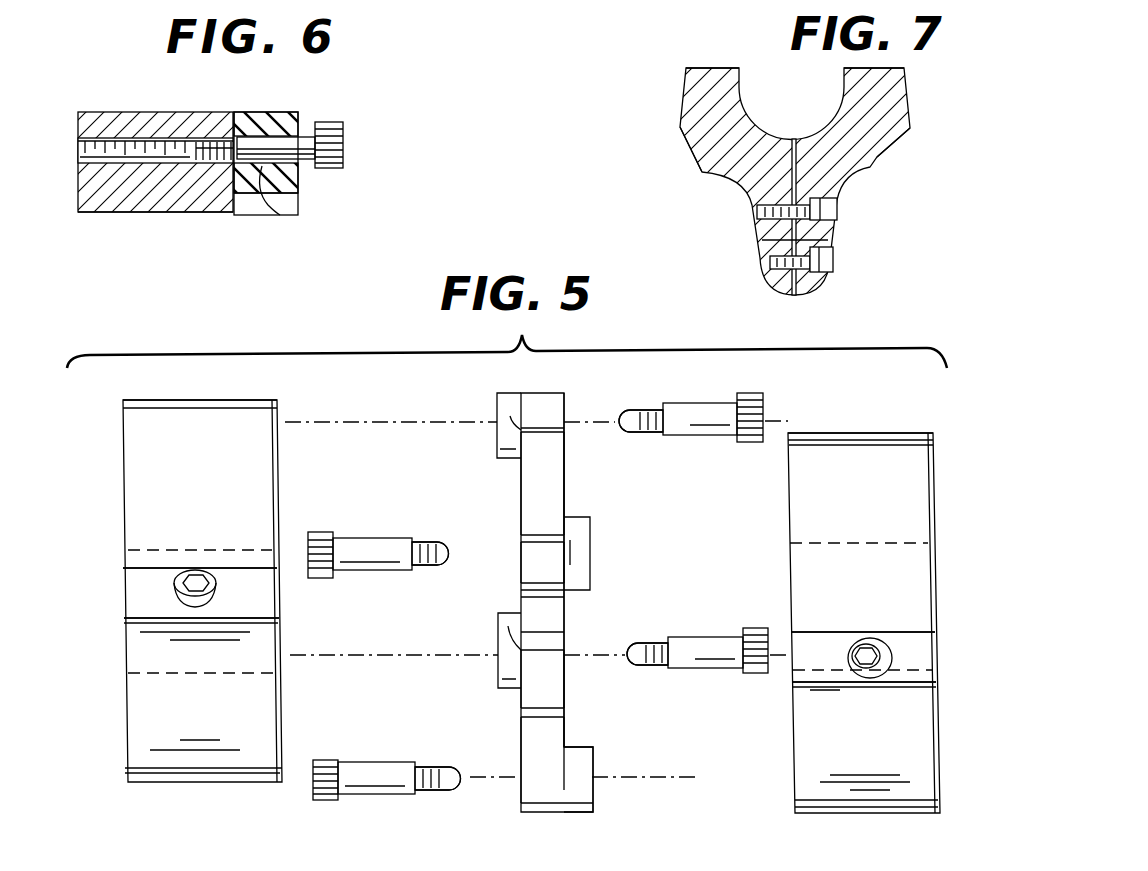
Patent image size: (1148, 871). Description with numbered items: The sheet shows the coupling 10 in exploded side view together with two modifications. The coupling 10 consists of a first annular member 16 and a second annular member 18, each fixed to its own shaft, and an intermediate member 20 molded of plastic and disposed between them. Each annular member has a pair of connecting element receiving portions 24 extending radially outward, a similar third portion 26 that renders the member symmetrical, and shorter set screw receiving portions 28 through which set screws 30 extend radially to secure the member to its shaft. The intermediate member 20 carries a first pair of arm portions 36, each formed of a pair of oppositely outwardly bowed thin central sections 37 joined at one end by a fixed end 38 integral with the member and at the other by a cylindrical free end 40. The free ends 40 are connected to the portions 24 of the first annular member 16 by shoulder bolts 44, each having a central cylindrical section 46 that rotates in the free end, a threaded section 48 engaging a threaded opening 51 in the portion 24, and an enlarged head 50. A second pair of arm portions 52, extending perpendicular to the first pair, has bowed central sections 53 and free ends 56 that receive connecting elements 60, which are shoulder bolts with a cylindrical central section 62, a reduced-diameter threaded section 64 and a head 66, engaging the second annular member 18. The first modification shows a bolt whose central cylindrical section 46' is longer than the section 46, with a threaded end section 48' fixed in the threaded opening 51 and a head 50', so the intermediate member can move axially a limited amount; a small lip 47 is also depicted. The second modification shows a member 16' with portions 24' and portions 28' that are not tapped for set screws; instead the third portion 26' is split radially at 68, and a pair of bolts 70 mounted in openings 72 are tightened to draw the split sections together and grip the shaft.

In FIG. 5, the coupling 10 is at (942, 428).
In FIG. 6, the first annular member 16 is at (146, 248).
In FIG. 5, the first annular member 16 is at (229, 573).
In FIG. 5, the second annular member 18 is at (908, 388).
In FIG. 6, the intermediate member 20 is at (288, 110).
In FIG. 5, the intermediate member 20 is at (497, 392).
In FIG. 6, the connecting element receiving portions 24 is at (154, 140).
In FIG. 5, the connecting element receiving portions 24 is at (528, 596).
In FIG. 5, the third portion 26 is at (203, 798).
In FIG. 7, the set screw receiving portions 28 is at (921, 148).
In FIG. 5, the set screw receiving portions 28 is at (557, 625).
In FIG. 5, the set screws 30 is at (192, 572).
In FIG. 5, the first pair of arm portions 36 is at (571, 480).
In FIG. 5, the central sections 37 is at (535, 486).
In FIG. 5, the fixed end 38 is at (537, 562).
In FIG. 6, the free end 40 is at (305, 188).
In FIG. 5, the free end 40 is at (500, 440).
In FIG. 6, the shoulder bolts 44 is at (348, 120).
In FIG. 5, the shoulder bolts 44 is at (711, 542).
In FIG. 5, the central cylindrical sections 46 is at (703, 559).
In FIG. 5, the threaded sections 48 is at (646, 538).
In FIG. 5, the enlarged head 50 is at (754, 559).
In FIG. 5, the second pair of arm portions 52 is at (519, 736).
In FIG. 5, the central sections 53 is at (562, 726).
In FIG. 5, the free end 56 is at (585, 553).
In FIG. 5, the connecting elements 60 is at (387, 656).
In FIG. 5, the cylindrical central section 62 is at (362, 542).
In FIG. 5, the threaded section 64 is at (447, 546).
In FIG. 5, the head 66 is at (320, 578).
In FIG. 7, the modified first annular member 16' is at (749, 181).
In FIG. 7, the connecting element receiving portions of modified member 24' is at (800, 60).
In FIG. 7, the third portion of modified member 26' is at (851, 217).
In FIG. 7, the portions of modified member 28' is at (658, 161).
In FIG. 6, the central cylindrical section of modified bolt 46' is at (250, 103).
In FIG. 6, the retaining lip 47 is at (270, 212).
In FIG. 6, the threaded end section of modified bolt 48' is at (202, 199).
In FIG. 6, the head of modified bolt 50' is at (324, 154).
In FIG. 6, the threaded openings 51 is at (150, 165).
In FIG. 7, the radial split 68 is at (790, 240).
In FIG. 7, the bolts 70 is at (840, 205).
In FIG. 7, the openings 72 is at (757, 211).